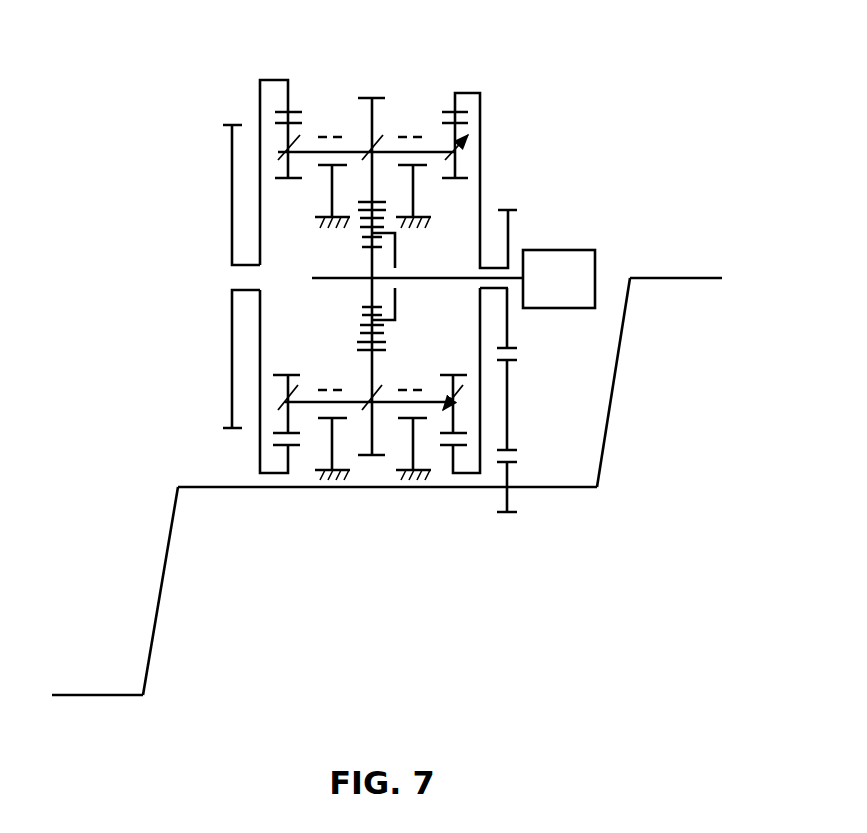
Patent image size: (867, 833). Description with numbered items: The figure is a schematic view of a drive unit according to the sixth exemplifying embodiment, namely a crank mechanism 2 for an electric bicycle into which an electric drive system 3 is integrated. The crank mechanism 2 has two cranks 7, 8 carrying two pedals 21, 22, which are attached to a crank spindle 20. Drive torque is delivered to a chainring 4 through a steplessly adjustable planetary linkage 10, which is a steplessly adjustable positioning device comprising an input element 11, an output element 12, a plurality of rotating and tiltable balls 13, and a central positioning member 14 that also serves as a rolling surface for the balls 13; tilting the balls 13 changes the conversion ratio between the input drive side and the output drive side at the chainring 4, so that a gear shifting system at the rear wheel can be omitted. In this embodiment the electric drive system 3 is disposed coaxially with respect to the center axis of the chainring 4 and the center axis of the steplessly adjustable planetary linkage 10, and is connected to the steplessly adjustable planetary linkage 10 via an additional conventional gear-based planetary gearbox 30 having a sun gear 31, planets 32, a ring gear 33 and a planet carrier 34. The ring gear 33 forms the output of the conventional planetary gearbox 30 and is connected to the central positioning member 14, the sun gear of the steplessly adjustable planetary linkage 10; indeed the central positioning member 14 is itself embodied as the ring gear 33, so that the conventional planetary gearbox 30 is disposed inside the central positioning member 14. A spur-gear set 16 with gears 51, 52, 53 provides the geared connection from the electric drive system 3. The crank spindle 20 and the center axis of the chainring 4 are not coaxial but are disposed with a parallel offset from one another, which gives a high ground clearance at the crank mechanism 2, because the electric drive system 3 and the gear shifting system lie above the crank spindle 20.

The crank mechanism 2 is at (618, 473).
The electric drive system 3 is at (553, 250).
The chainring 4 is at (230, 185).
The crank 7 is at (613, 398).
The crank 8 is at (155, 613).
The steplessly adjustable planetary linkage 10 is at (253, 62).
The input element 11 is at (482, 105).
The output element 12 is at (258, 98).
The balls 13 is at (357, 142).
The central positioning member 14 is at (378, 343).
The spur-gear set 16 is at (533, 428).
The crank spindle 20 is at (298, 488).
The pedal 21 is at (680, 277).
The pedal 22 is at (103, 697).
The conventional planetary gearbox 30 is at (353, 235).
The sun gear 31 is at (368, 270).
The planets 32 is at (365, 318).
The ring gear 33 is at (362, 338).
The planet carrier 34 is at (398, 260).
The gear 51 is at (509, 500).
The gear 52 is at (509, 393).
The gear 53 is at (509, 323).